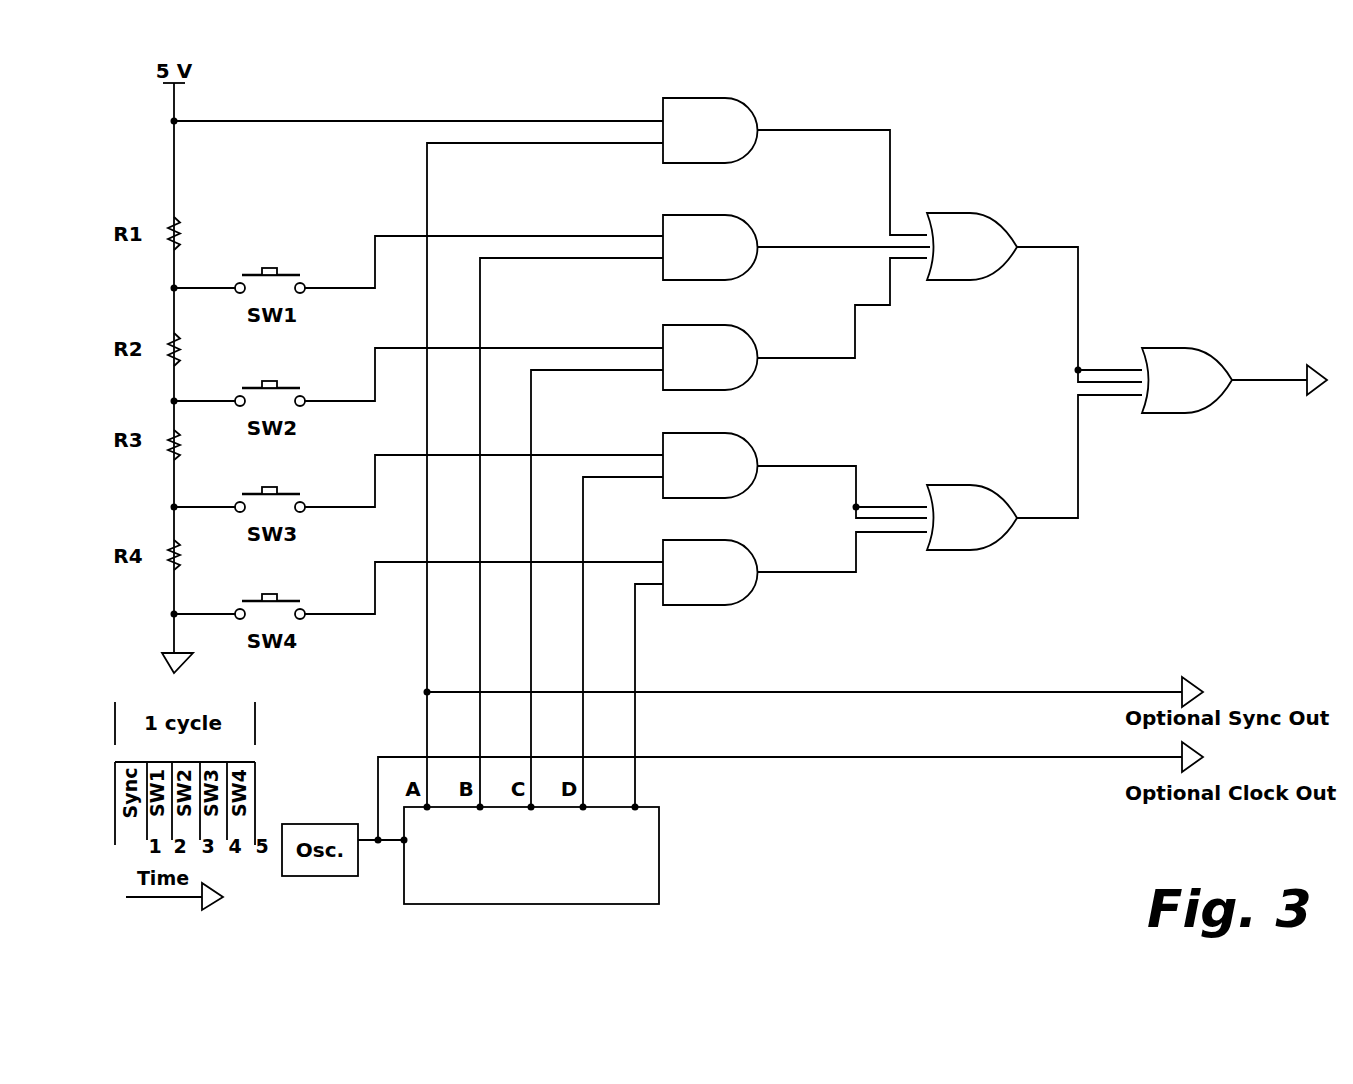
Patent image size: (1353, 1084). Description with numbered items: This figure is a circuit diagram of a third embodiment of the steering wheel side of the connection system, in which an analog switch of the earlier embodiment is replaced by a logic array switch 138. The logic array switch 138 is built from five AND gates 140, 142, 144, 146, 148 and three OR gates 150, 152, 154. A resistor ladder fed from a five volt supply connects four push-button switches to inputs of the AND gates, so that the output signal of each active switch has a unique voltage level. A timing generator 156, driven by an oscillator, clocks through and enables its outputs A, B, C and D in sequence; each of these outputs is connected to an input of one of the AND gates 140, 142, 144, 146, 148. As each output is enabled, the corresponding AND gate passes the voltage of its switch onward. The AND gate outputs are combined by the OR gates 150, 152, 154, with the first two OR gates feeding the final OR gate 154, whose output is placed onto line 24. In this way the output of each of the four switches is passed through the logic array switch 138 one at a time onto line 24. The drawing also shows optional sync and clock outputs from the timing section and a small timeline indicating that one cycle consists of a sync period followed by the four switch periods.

The logic array switch 138 is at (950, 95).
The AND gate 140 is at (723, 123).
The AND gate 142 is at (723, 237).
The AND gate 144 is at (723, 347).
The AND gate 146 is at (723, 457).
The AND gate 148 is at (723, 560).
The OR gate 150 is at (958, 233).
The OR gate 152 is at (958, 505).
The OR gate 154 is at (1180, 365).
The line 24 is at (1263, 377).
The timing generator 156 is at (592, 890).